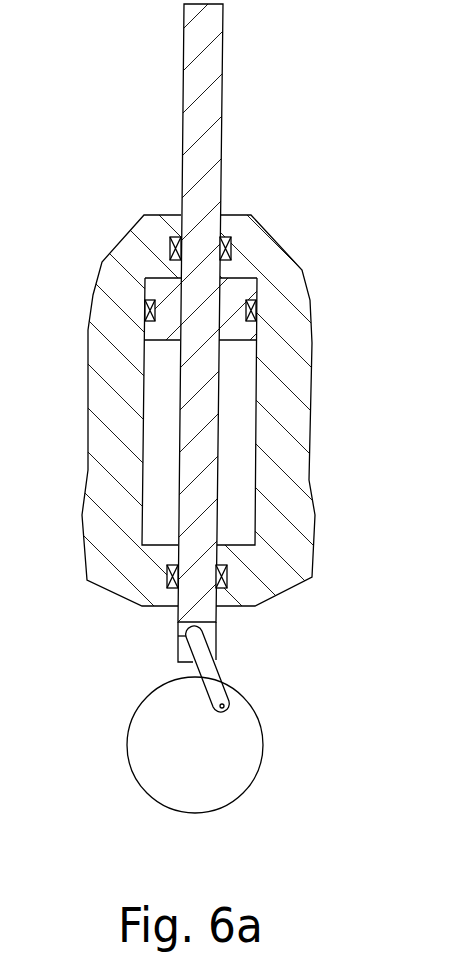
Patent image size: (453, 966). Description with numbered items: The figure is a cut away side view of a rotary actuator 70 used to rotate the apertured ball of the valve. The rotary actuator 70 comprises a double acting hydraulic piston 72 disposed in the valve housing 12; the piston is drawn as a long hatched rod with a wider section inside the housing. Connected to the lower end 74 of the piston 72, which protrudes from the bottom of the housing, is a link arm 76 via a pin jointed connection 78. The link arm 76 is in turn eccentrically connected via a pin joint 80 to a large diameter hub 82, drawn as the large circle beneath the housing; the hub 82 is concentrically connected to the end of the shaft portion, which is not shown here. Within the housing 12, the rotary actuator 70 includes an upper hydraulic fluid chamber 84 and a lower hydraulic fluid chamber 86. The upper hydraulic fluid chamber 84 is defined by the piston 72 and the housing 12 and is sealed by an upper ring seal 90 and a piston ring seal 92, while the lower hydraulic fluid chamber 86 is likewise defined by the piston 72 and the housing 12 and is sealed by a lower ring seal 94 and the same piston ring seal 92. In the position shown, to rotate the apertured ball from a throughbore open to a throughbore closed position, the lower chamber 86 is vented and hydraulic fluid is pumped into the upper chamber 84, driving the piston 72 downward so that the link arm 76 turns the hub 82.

The valve housing 12 is at (297, 370).
The rotary actuator 70 is at (250, 134).
The double acting hydraulic piston 72 is at (232, 285).
The lower end 74 is at (211, 641).
The link arm 76 is at (213, 683).
The pin jointed connection 78 is at (188, 637).
The pin joint 80 is at (232, 717).
The large diameter hub 82 is at (233, 783).
The upper hydraulic fluid chamber 84 is at (150, 272).
The lower hydraulic fluid chamber 86 is at (152, 421).
The upper ring seal 90 is at (229, 246).
The piston ring seal 92 is at (258, 313).
The lower ring seal 94 is at (228, 573).